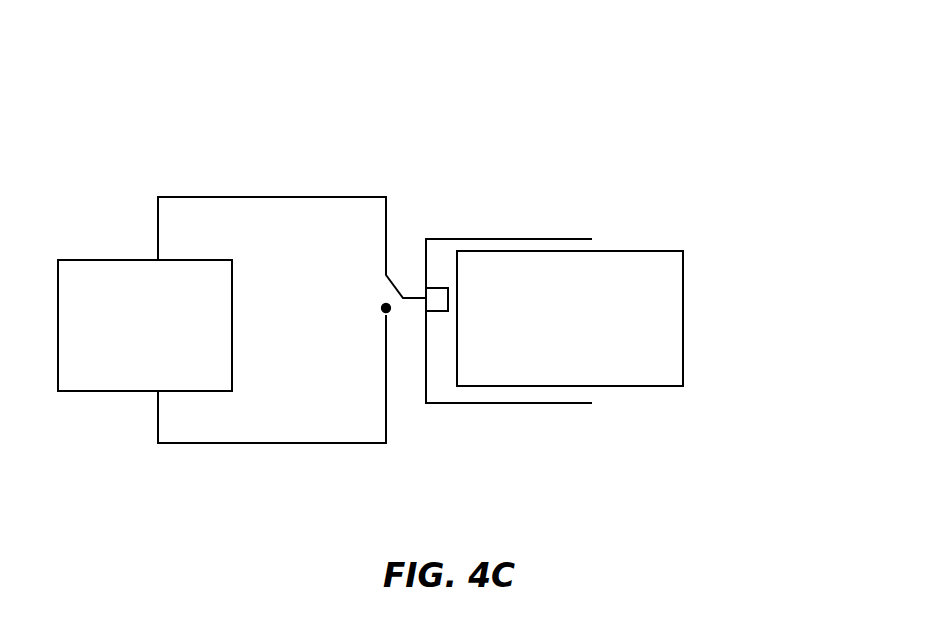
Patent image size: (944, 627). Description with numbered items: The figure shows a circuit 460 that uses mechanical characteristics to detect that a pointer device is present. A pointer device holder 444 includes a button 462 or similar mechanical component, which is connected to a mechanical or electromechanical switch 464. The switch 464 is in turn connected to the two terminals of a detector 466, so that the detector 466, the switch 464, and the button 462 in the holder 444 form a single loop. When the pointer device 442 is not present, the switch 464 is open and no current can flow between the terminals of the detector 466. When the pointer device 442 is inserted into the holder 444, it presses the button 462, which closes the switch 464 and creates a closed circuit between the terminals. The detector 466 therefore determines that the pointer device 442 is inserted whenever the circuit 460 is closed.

The circuit 460 is at (665, 136).
The pointer device 442 is at (650, 251).
The pointer device holder 444 is at (567, 239).
The button 462 is at (449, 290).
The switch 464 is at (395, 281).
The detector 466 is at (112, 260).